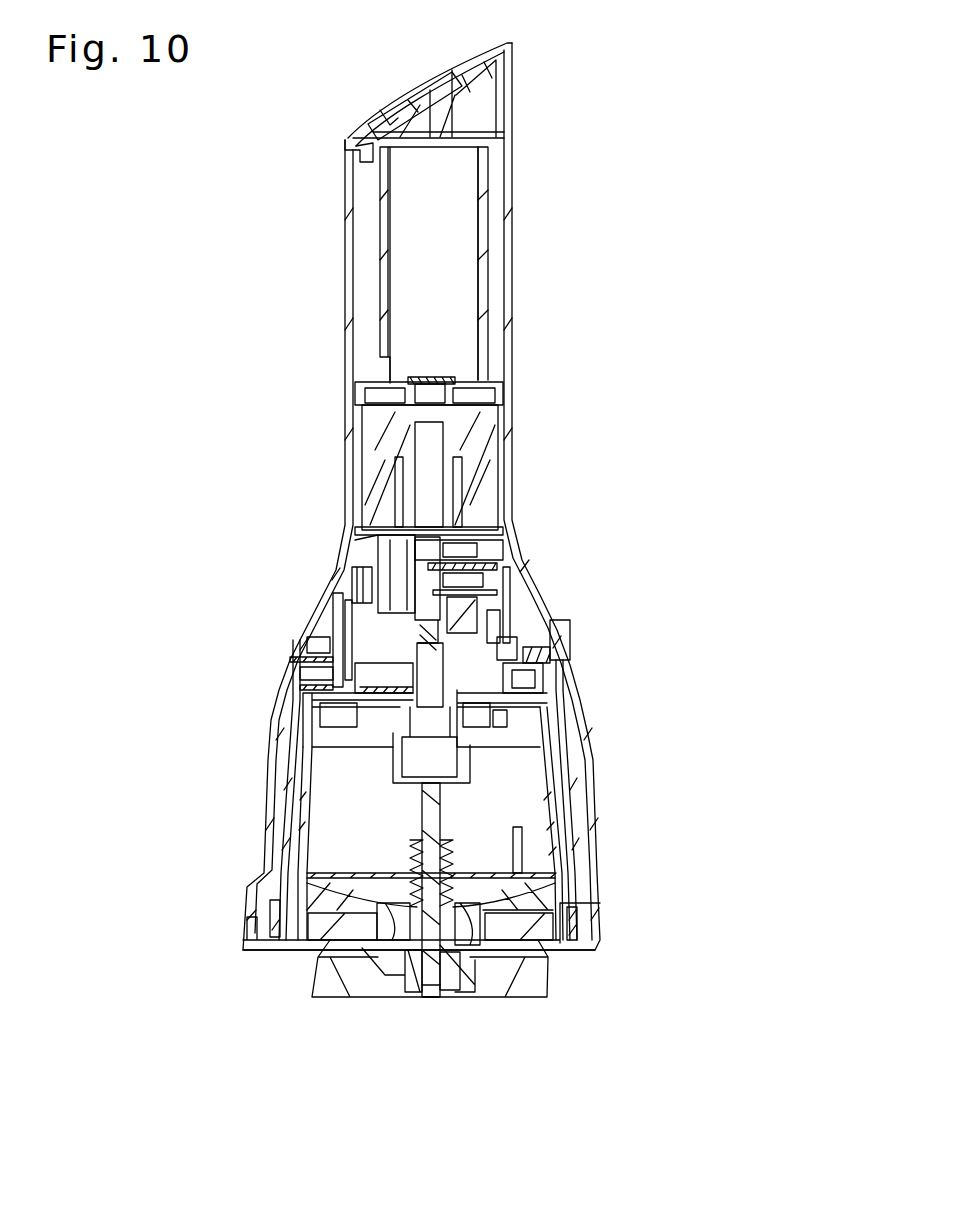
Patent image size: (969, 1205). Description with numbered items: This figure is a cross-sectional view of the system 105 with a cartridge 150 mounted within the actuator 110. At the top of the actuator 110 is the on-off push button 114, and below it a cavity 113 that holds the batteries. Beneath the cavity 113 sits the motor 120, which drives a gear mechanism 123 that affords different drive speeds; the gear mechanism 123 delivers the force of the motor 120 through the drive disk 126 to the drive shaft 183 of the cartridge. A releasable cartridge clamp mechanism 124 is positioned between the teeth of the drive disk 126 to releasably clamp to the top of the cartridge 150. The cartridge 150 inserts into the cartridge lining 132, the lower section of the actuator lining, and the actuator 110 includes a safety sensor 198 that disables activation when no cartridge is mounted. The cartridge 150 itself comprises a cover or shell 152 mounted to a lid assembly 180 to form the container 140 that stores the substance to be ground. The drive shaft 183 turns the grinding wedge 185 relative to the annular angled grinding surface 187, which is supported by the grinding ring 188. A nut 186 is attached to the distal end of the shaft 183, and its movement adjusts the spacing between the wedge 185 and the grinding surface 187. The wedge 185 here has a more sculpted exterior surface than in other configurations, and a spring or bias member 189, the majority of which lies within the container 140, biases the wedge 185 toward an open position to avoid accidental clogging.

The system 105 is at (770, 133).
The actuator 110 is at (317, 366).
The cavity 113 is at (448, 249).
The on-off push button 114 is at (406, 110).
The motor 120 is at (480, 465).
The gear mechanism 123 is at (514, 580).
The releasable cartridge clamp mechanism 124 is at (440, 660).
The drive disk 126 is at (350, 684).
The cartridge lining 132 is at (566, 778).
The container 140 is at (210, 773).
The cartridge 150 is at (618, 702).
The cover or shell 152 is at (560, 812).
The lid assembly 180 is at (615, 882).
The drive shaft 183 is at (432, 1000).
The grinding wedge 185 is at (392, 975).
The nut 186 is at (452, 992).
The grinding surface 187 is at (500, 952).
The grinding ring 188 is at (555, 945).
The bias member 189 is at (226, 863).
The safety sensor 198 is at (562, 657).